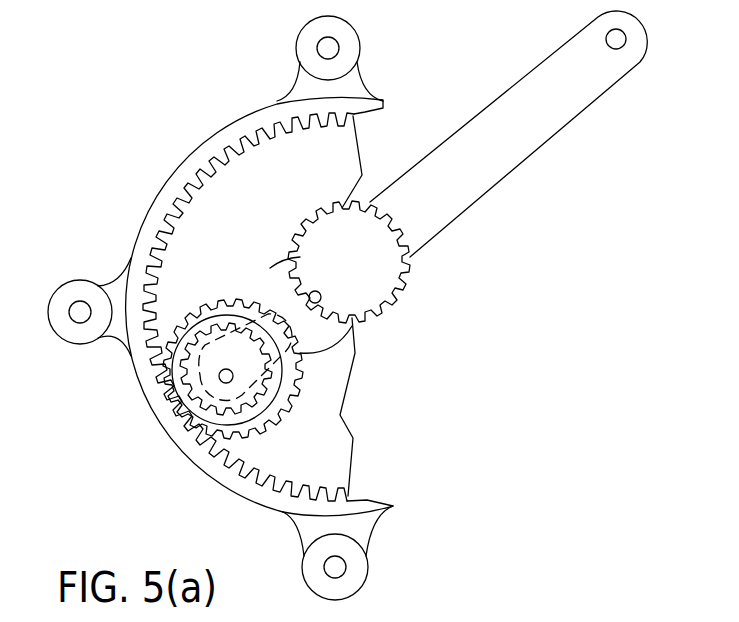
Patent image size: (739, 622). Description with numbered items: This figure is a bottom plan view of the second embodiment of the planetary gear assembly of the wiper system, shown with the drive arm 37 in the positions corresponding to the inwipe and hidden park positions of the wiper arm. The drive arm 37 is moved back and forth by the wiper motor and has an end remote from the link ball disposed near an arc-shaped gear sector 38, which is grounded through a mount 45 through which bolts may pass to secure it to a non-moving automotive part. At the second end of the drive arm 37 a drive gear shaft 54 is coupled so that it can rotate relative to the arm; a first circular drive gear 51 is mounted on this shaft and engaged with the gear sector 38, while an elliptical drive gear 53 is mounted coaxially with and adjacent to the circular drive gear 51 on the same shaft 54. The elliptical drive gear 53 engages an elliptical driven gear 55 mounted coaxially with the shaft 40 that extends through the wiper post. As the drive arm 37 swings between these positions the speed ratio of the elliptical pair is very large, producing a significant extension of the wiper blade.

The drive arm 37 is at (557, 115).
The arc-shaped gear sector 38 is at (163, 184).
The shaft 40 is at (314, 291).
The mount 45 is at (78, 288).
The first circular drive gear 51 is at (179, 325).
The elliptical drive gear 53 is at (252, 310).
The drive gear shaft 54 is at (231, 379).
The elliptical driven gear 55 is at (367, 277).